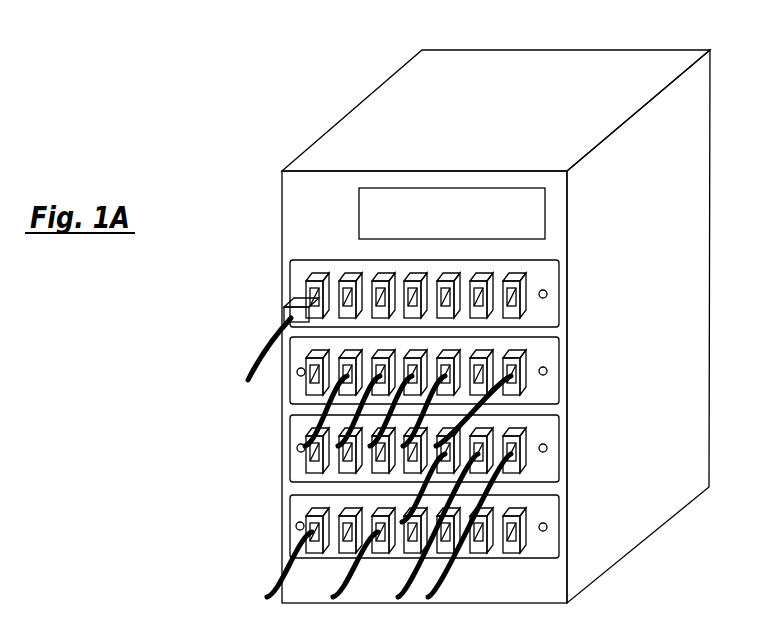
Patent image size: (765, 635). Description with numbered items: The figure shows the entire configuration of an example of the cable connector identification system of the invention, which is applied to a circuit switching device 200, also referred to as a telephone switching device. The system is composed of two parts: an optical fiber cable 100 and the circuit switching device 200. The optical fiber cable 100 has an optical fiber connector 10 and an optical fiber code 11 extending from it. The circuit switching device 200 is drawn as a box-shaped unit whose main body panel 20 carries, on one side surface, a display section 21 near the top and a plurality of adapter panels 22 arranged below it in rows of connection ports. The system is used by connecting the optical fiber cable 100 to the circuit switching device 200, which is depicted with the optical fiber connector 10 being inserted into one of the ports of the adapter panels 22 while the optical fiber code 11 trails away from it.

The circuit switching device 200 is at (383, 58).
The main body panel 20 is at (293, 213).
The display section 21 is at (386, 198).
The adapter panel 22 is at (293, 518).
The optical fiber cable 100 is at (257, 332).
The optical fiber connector 10 is at (293, 293).
The optical fiber code 11 is at (253, 363).